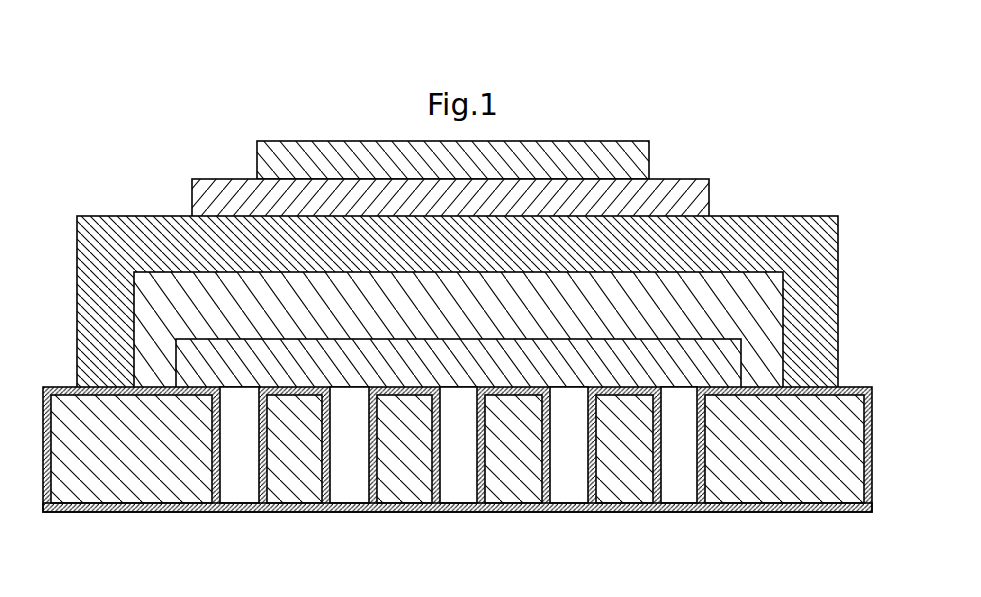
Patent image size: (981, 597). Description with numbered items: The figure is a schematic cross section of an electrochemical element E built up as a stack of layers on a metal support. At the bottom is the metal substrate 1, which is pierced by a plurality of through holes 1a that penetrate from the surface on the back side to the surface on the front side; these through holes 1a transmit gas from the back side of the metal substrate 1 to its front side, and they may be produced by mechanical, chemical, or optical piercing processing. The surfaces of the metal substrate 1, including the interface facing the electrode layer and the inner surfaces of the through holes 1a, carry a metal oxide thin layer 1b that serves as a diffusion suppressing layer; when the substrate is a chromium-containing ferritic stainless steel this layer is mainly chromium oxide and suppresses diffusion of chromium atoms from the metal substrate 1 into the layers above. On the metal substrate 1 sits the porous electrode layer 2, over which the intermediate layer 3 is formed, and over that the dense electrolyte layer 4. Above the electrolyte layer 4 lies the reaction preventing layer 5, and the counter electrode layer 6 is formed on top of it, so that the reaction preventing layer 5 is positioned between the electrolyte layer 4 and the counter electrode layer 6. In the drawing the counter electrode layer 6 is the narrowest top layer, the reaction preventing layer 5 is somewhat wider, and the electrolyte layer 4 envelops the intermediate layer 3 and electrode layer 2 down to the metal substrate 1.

The electrochemical element E is at (177, 82).
The metal substrate 1 is at (778, 487).
The through holes 1a is at (460, 502).
The metal oxide thin layer 1b is at (723, 512).
The electrode layer 2 is at (730, 358).
The intermediate layer 3 is at (755, 305).
The electrolyte layer 4 is at (737, 230).
The reaction preventing layer 5 is at (200, 194).
The counter electrode layer 6 is at (277, 157).